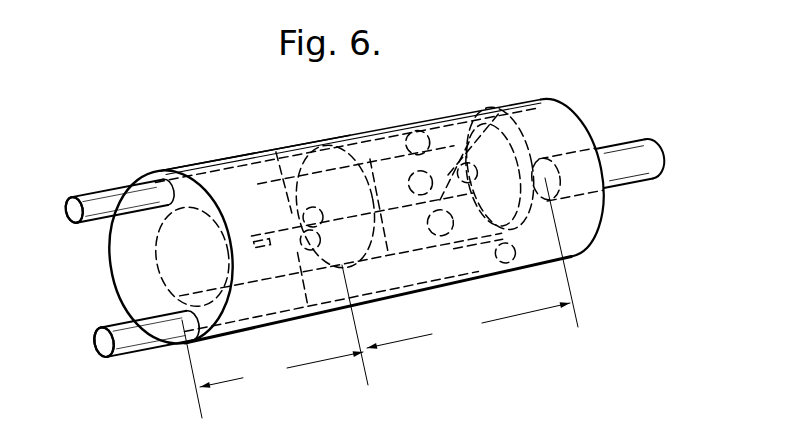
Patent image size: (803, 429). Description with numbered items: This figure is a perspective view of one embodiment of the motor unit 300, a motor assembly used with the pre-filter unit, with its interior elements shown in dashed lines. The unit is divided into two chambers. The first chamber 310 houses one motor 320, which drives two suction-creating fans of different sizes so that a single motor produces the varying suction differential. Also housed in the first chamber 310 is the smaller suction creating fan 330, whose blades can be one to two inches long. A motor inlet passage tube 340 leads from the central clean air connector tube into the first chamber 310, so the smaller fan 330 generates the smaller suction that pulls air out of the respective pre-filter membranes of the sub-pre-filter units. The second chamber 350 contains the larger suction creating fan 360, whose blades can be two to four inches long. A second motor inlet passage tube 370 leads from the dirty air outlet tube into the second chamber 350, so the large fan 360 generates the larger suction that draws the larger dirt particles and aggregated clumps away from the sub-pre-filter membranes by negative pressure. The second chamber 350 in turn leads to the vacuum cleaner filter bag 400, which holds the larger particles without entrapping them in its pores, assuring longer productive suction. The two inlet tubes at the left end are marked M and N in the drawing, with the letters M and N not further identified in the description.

The motor unit 300 is at (322, 134).
The first chamber 310 is at (275, 341).
The motor 320 is at (205, 163).
The smaller suction creating fan 330 is at (280, 152).
The motor inlet passage tube 340 is at (127, 357).
The second chamber 350 is at (472, 263).
The larger suction creating fan 360 is at (497, 108).
The motor inlet passage tube 370 is at (98, 200).
The vacuum cleaner filter bag 400 is at (568, 102).
The shaft M is at (68, 213).
The shaft N is at (95, 338).